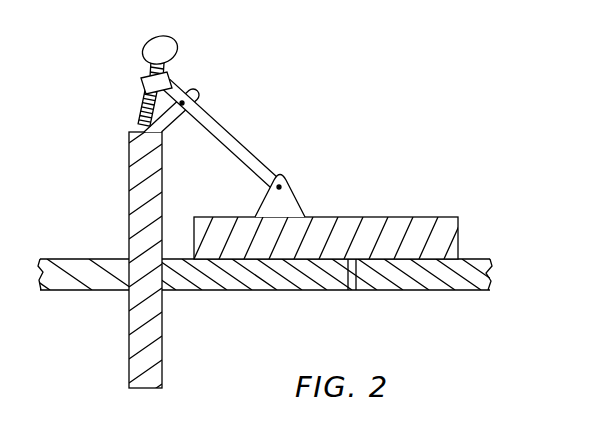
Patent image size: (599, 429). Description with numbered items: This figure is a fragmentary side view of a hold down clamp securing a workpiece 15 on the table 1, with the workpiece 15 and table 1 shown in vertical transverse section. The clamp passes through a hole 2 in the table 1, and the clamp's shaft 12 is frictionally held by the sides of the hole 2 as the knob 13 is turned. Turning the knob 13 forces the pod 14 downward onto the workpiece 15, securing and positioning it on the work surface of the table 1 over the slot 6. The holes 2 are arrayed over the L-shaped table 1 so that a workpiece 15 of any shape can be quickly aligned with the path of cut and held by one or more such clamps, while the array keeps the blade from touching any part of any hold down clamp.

The table 1 is at (73, 258).
The hole 2 is at (127, 258).
The slot 6 is at (352, 290).
The shaft 12 is at (178, 183).
The knob 13 is at (172, 50).
The pod 14 is at (297, 199).
The workpiece 15 is at (410, 217).